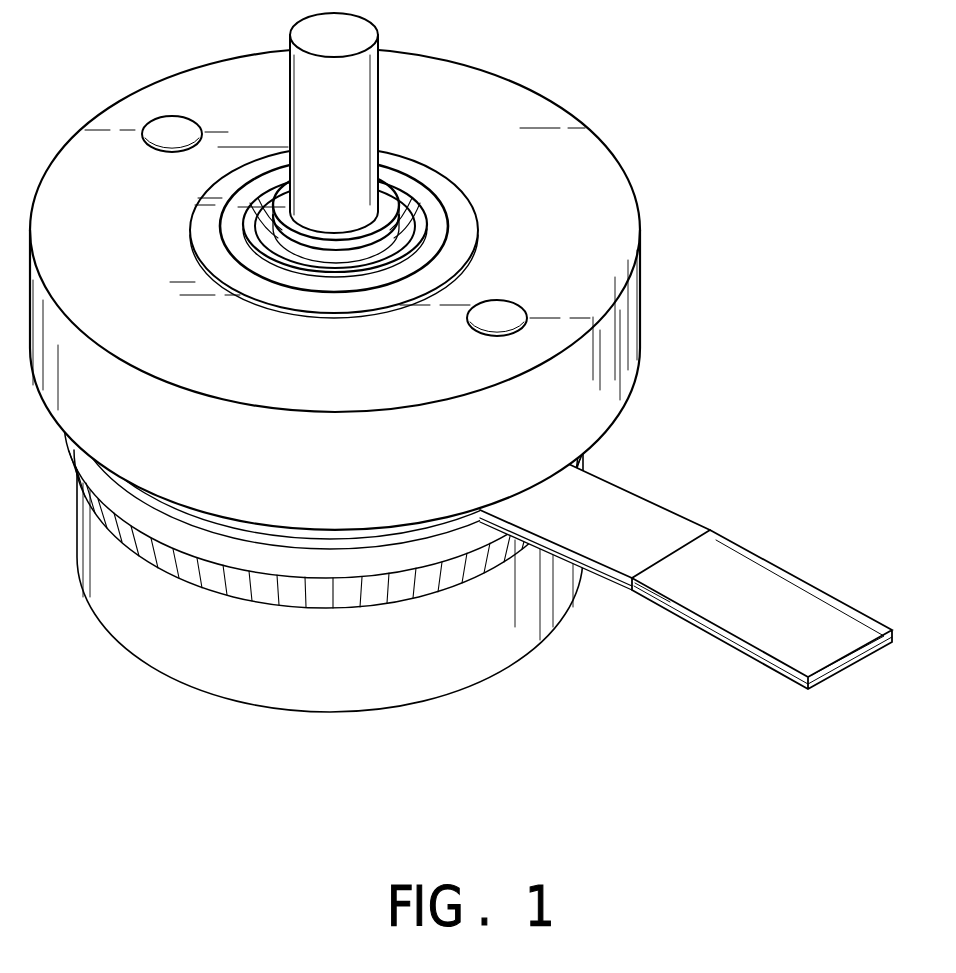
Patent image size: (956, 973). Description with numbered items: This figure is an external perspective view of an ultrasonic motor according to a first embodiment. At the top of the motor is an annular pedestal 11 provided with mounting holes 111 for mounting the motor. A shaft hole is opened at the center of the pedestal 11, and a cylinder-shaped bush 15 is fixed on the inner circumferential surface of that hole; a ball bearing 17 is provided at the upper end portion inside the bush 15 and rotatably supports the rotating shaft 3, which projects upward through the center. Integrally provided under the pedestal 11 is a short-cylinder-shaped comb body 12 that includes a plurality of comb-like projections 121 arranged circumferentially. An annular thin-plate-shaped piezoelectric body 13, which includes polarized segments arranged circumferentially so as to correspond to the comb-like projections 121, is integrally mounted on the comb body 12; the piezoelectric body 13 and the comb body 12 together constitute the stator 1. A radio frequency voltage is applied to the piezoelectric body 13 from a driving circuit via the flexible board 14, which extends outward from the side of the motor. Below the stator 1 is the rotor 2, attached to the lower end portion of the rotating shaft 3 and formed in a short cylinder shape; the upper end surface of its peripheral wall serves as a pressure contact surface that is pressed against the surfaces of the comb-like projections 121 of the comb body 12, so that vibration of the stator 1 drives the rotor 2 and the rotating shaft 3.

The stator 1 is at (650, 355).
The annular pedestal 11 is at (587, 173).
The mounting holes 111 is at (170, 128).
The comb body 12 is at (326, 549).
The comb-like projections 121 is at (240, 583).
The piezoelectric body 13 is at (193, 520).
The flexible board 14 is at (677, 533).
The bush 15 is at (368, 297).
The ball bearing 17 is at (268, 173).
The rotor 2 is at (528, 630).
The rotating shaft 3 is at (363, 115).